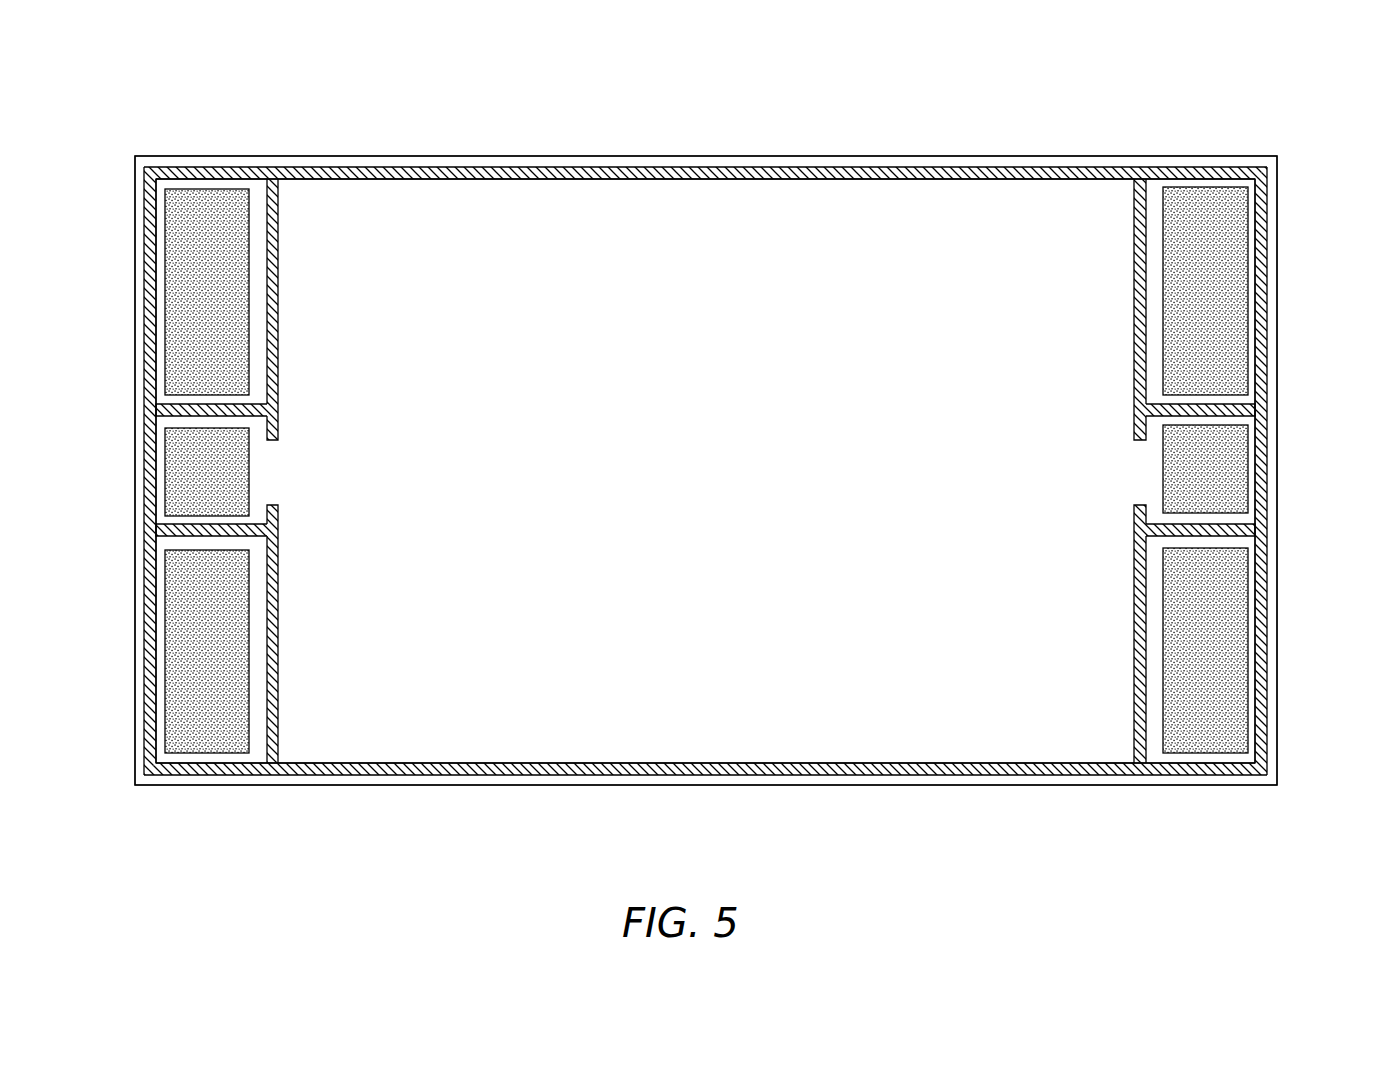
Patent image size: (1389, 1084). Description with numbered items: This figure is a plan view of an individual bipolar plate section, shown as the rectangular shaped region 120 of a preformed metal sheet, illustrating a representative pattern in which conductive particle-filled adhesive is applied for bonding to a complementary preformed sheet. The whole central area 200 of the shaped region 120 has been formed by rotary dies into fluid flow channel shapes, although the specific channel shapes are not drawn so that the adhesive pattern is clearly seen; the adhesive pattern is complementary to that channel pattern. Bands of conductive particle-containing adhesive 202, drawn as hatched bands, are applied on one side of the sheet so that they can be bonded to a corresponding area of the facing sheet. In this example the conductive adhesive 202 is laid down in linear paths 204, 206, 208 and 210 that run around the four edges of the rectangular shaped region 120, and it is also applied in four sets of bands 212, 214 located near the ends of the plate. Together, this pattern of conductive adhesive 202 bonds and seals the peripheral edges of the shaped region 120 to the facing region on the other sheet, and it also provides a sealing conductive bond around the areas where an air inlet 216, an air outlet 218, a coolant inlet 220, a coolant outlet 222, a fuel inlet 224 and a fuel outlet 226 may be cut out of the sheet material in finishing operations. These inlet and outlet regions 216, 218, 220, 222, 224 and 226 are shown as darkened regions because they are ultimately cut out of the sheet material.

The shaped region 120 is at (1178, 155).
The central area 200 is at (728, 483).
The conductive particle-containing adhesive 202 is at (826, 170).
The linear path 204 is at (1265, 317).
The linear path 206 is at (932, 172).
The linear path 208 is at (148, 665).
The linear path 210 is at (776, 768).
The band 212 is at (270, 234).
The band 214 is at (205, 410).
The air inlet 216 is at (175, 290).
The air outlet 218 is at (1245, 688).
The coolant inlet 220 is at (175, 475).
The coolant outlet 222 is at (1230, 470).
The fuel inlet 224 is at (190, 690).
The fuel outlet 226 is at (1222, 287).